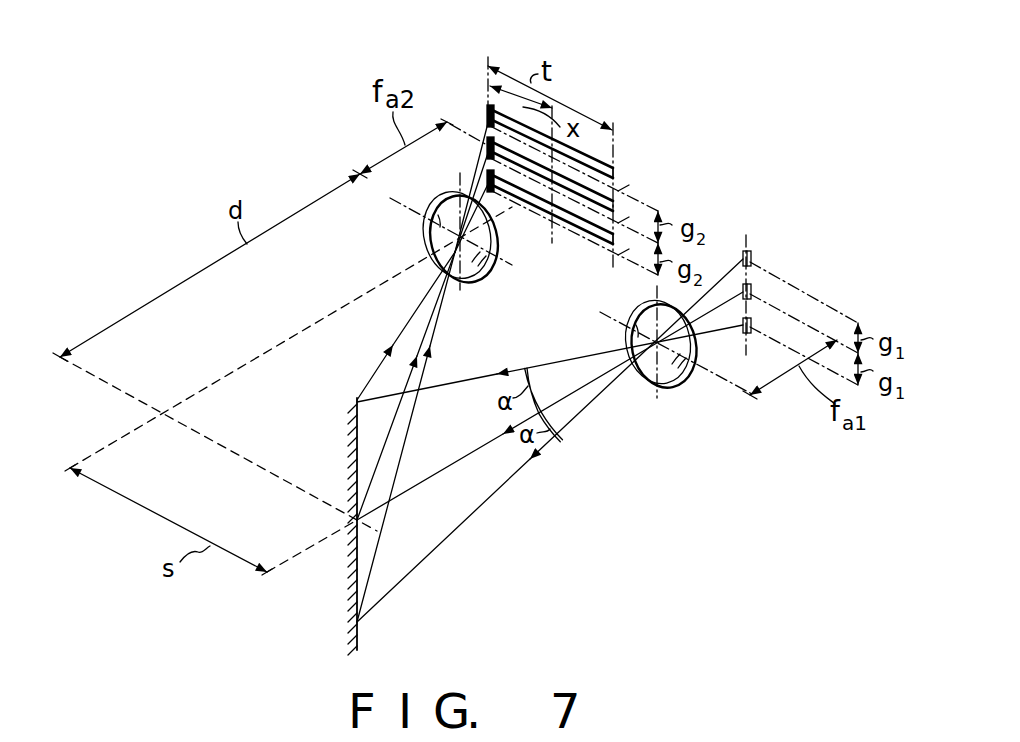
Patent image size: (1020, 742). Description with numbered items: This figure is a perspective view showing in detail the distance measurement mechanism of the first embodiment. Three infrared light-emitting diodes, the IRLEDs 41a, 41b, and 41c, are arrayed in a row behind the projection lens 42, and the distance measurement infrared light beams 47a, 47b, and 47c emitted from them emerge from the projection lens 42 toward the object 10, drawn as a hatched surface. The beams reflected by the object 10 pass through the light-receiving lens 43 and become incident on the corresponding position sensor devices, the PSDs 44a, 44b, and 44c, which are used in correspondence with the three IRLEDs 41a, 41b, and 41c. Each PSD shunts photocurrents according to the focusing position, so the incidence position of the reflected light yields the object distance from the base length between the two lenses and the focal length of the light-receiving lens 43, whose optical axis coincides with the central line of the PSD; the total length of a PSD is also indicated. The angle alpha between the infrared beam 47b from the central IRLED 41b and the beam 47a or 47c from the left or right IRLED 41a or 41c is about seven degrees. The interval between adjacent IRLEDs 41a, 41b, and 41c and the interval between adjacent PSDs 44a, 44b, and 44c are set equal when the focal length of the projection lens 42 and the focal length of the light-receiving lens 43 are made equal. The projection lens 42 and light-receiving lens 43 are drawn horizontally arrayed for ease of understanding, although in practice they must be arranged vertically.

The object 10 is at (358, 637).
The IRLED 41a is at (750, 257).
The central IRLED 41b is at (753, 292).
The IRLED 41c is at (750, 333).
The projection lens 42 is at (670, 387).
The light-receiving lens 43 is at (473, 282).
The PSD 44a is at (613, 169).
The PSD 44b is at (615, 208).
The PSD 44c is at (584, 236).
The distance measurement infrared light beam 47a is at (466, 529).
The infrared beam 47b is at (473, 452).
The distance measurement infrared light beam 47c is at (453, 384).